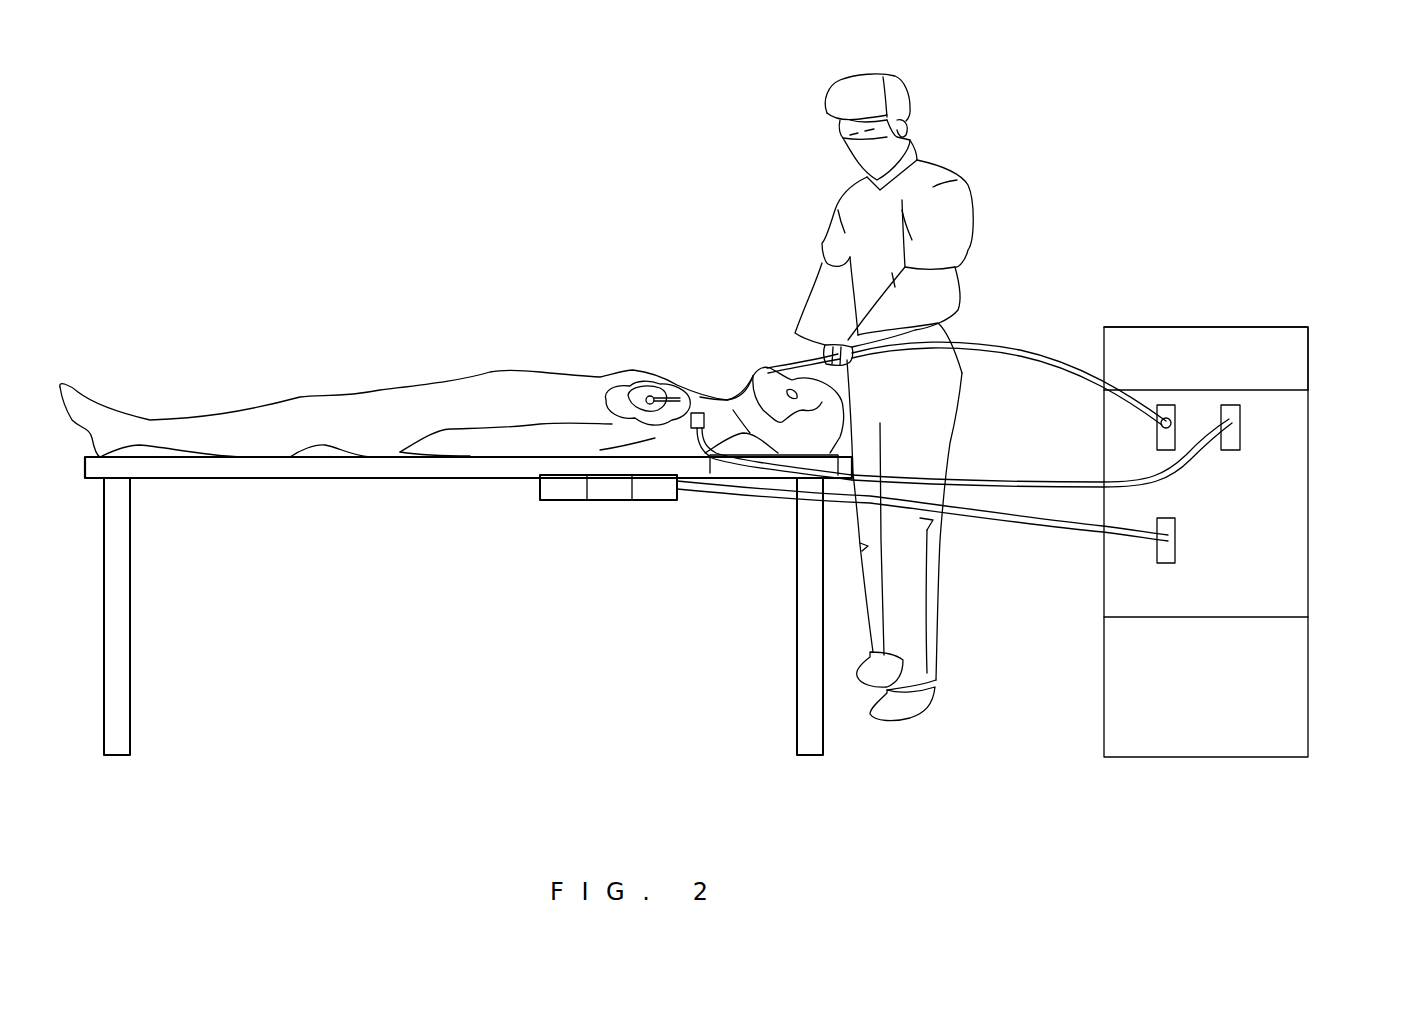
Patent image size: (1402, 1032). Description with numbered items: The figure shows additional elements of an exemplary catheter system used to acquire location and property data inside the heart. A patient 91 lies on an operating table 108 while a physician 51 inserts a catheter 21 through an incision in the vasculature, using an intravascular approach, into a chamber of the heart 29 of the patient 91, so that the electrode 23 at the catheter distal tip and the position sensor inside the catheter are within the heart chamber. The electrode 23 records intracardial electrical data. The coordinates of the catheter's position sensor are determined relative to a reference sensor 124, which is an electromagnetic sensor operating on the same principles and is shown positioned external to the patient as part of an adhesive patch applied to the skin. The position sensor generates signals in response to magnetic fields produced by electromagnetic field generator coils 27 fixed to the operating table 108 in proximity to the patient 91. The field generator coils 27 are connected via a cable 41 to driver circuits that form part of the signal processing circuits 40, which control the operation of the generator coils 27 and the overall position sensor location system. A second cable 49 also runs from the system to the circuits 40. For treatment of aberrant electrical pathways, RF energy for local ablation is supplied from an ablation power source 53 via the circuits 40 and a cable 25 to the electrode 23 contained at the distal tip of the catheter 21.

The operating table 108 is at (212, 480).
The patient 91 is at (418, 383).
The electrode 23 is at (633, 392).
The heart 29 is at (650, 388).
The reference sensor 124 is at (698, 413).
The catheter 21 is at (737, 397).
The electromagnetic field generator coils 27 is at (660, 500).
The physician 51 is at (850, 190).
The cable 25 is at (1072, 380).
The signal cable 49 is at (1010, 482).
The cable 41 is at (1060, 530).
The signal processing circuits 40 is at (1312, 447).
The ablation power source 53 is at (1300, 357).